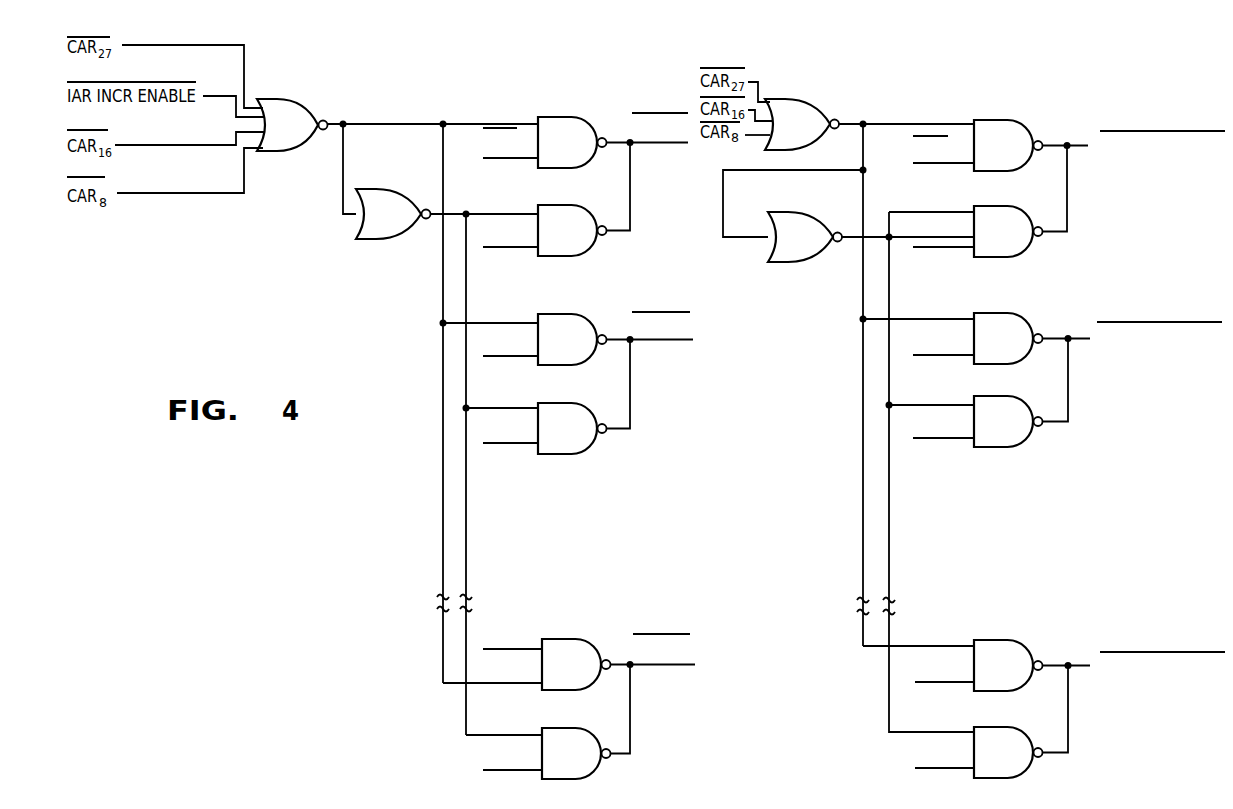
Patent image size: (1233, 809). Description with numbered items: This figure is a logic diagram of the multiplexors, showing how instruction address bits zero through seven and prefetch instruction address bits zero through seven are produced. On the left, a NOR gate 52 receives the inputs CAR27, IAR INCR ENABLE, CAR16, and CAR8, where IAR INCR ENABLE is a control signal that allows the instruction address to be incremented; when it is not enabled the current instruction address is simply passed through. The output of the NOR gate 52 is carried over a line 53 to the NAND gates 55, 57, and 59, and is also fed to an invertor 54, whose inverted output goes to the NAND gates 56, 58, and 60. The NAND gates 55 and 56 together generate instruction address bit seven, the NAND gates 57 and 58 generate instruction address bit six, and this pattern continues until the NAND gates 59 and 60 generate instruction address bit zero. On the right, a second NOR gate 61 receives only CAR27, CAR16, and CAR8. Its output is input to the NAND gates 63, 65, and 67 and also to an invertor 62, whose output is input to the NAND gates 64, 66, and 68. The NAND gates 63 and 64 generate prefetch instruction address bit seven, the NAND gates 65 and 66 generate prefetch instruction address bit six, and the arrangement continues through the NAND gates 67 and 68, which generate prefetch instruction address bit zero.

The NOR gate 52 is at (278, 99).
The line 53 is at (382, 124).
The invertor 54 is at (386, 240).
The NAND gate 55 is at (572, 117).
The NAND gate 56 is at (589, 256).
The NAND gate 57 is at (588, 314).
The NAND gate 58 is at (593, 454).
The NAND gate 59 is at (590, 639).
The NAND gate 60 is at (596, 779).
The NOR gate 61 is at (797, 102).
The invertor 62 is at (802, 252).
The NAND gate 63 is at (980, 120).
The NAND gate 64 is at (1022, 257).
The NAND gate 65 is at (1018, 313).
The NAND gate 66 is at (1020, 447).
The NAND gate 67 is at (1012, 640).
The NAND gate 68 is at (1030, 778).